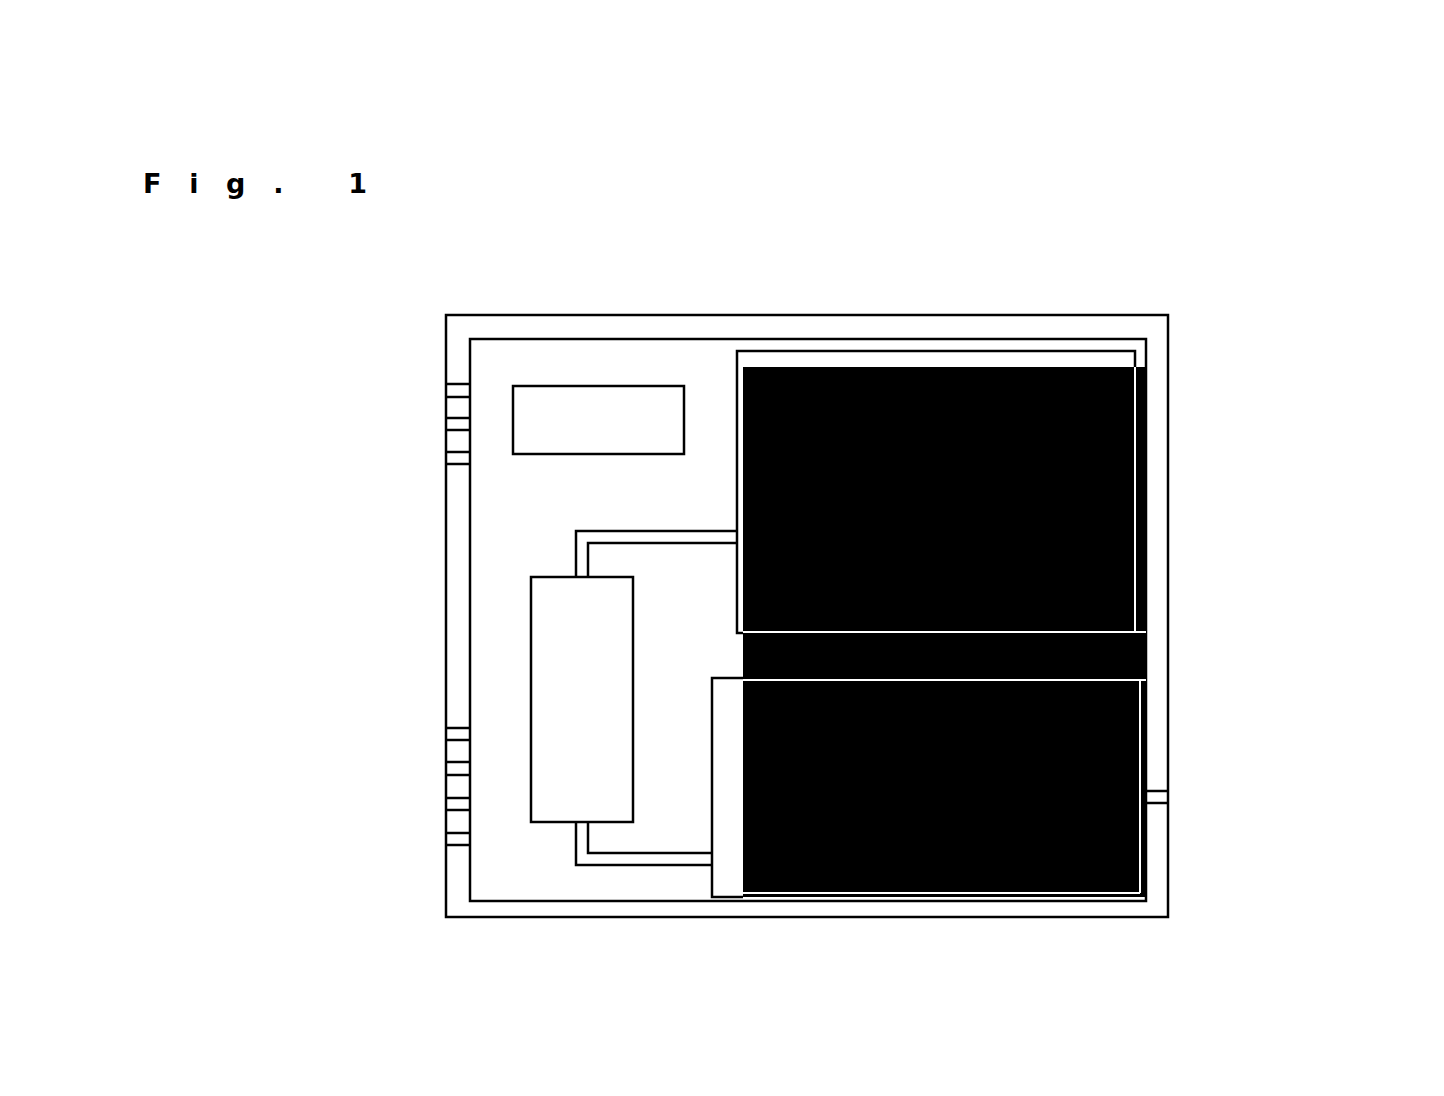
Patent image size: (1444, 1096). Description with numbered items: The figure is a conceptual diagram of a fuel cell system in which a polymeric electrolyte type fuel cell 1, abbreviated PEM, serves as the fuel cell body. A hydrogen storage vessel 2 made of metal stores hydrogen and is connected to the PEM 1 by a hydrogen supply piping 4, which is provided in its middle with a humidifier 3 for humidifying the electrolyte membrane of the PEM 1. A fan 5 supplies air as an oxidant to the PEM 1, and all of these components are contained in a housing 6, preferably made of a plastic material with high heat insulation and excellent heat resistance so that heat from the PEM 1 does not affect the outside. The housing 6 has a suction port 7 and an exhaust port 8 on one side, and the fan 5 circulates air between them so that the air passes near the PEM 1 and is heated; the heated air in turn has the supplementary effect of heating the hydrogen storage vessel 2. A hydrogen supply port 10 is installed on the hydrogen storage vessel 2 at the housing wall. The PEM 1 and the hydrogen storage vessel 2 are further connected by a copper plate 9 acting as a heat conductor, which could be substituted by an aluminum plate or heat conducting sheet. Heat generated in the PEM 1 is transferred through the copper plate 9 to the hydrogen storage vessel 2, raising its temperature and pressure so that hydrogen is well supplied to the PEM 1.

The polymeric electrolyte type fuel cell 1 is at (913, 357).
The hydrogen storage vessel 2 is at (720, 863).
The humidifier 3 is at (582, 699).
The hydrogen supply piping 4 is at (596, 863).
The fan 5 is at (598, 420).
The housing 6 is at (602, 325).
The suction port 7 is at (446, 427).
The exhaust port 8 is at (445, 805).
The copper plate 9 is at (1093, 587).
The hydrogen supply port 10 is at (1168, 803).